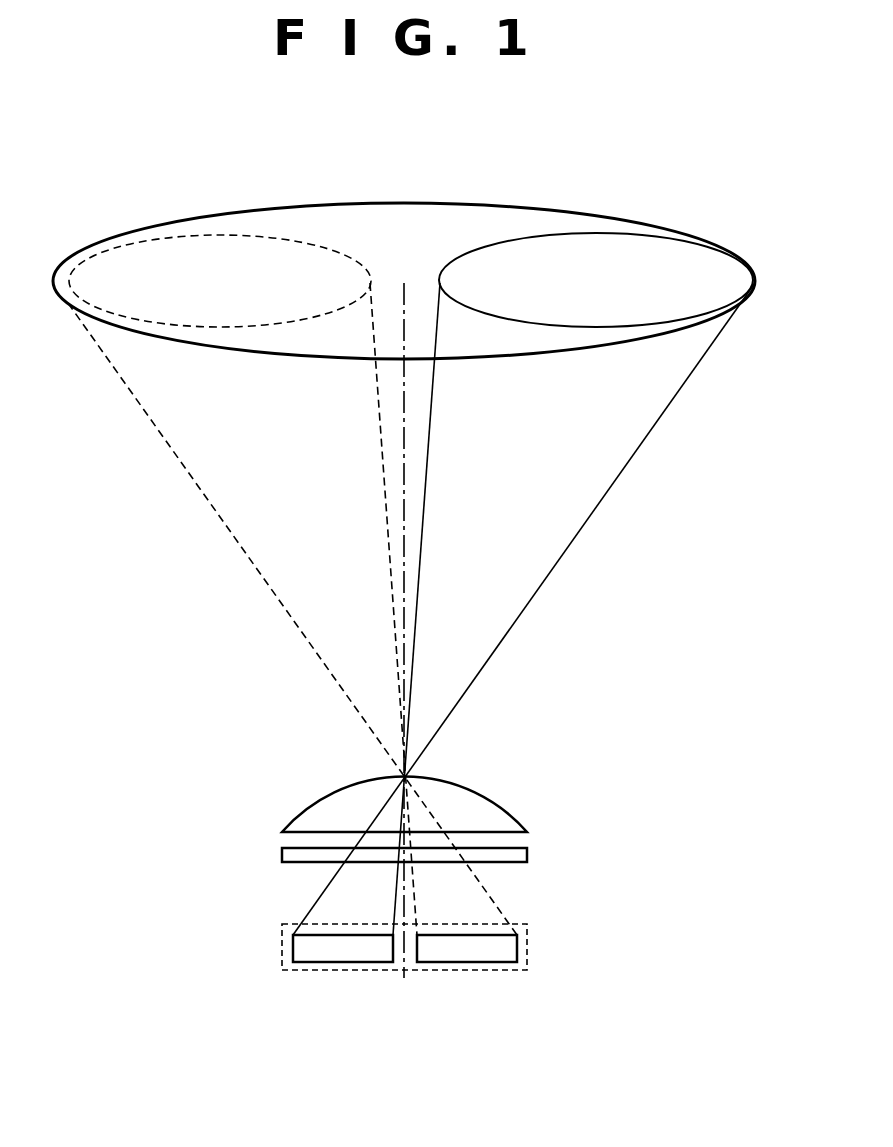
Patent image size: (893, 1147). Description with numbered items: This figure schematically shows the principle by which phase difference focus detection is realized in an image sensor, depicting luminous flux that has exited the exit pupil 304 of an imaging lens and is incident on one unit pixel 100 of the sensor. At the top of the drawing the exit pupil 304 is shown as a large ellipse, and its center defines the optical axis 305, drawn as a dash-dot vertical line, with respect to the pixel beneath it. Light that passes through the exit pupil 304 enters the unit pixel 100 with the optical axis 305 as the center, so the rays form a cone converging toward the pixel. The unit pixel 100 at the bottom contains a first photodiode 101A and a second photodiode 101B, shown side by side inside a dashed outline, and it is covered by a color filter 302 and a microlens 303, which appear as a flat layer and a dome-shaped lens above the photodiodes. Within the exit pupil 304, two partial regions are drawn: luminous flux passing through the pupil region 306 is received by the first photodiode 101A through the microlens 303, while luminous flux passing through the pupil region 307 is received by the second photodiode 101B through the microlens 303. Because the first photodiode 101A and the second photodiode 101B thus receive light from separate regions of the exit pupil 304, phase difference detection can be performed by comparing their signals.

The unit pixel 100 is at (527, 924).
The first photodiode 101A is at (293, 950).
The second photodiode 101B is at (518, 950).
The color filter 302 is at (282, 856).
The microlens 303 is at (282, 826).
The exit pupil 304 is at (247, 204).
The optical axis 305 is at (405, 297).
The pupil region 306 is at (650, 258).
The pupil region 307 is at (140, 256).